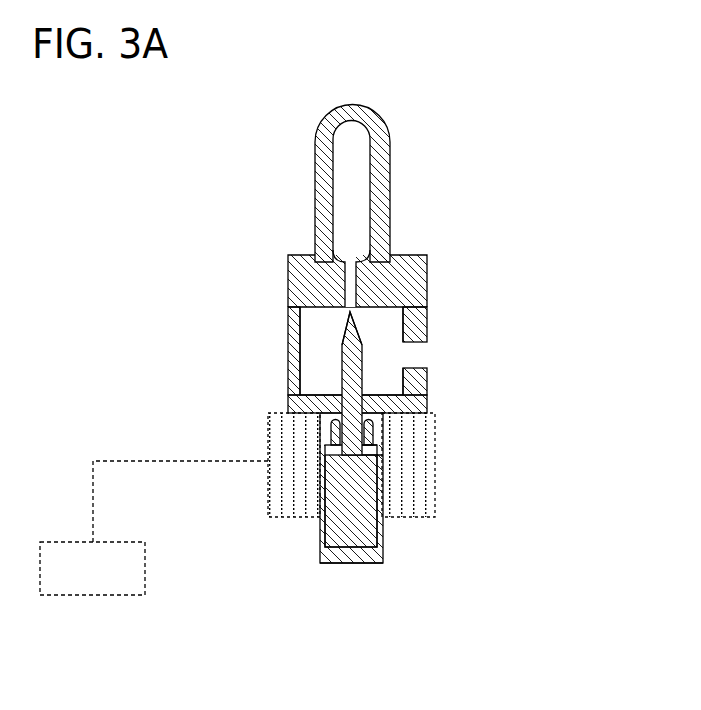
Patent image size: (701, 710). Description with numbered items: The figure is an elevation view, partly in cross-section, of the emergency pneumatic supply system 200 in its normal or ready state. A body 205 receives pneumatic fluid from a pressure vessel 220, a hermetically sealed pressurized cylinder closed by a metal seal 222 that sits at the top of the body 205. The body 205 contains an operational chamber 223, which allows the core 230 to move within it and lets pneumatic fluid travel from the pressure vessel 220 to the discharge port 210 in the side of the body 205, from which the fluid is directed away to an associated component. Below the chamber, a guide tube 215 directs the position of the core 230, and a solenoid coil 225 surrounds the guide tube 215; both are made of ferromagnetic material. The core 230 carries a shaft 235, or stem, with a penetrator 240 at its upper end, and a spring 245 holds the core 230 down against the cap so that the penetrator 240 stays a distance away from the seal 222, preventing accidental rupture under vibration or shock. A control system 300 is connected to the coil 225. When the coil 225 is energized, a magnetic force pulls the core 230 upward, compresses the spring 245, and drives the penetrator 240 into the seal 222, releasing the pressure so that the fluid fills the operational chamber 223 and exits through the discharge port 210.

The emergency pneumatic supply system 200 is at (411, 389).
The body 205 is at (402, 278).
The discharge port 210 is at (425, 355).
The guide tube 215 is at (316, 539).
The pressure vessel 220 is at (405, 190).
The seal 222 is at (345, 320).
The operational chamber 223 is at (354, 351).
The solenoid coil 225 is at (438, 421).
The core 230 is at (358, 503).
The shaft 235 is at (335, 372).
The penetrator 240 is at (360, 320).
The spring 245 is at (322, 454).
The control system 300 is at (154, 528).